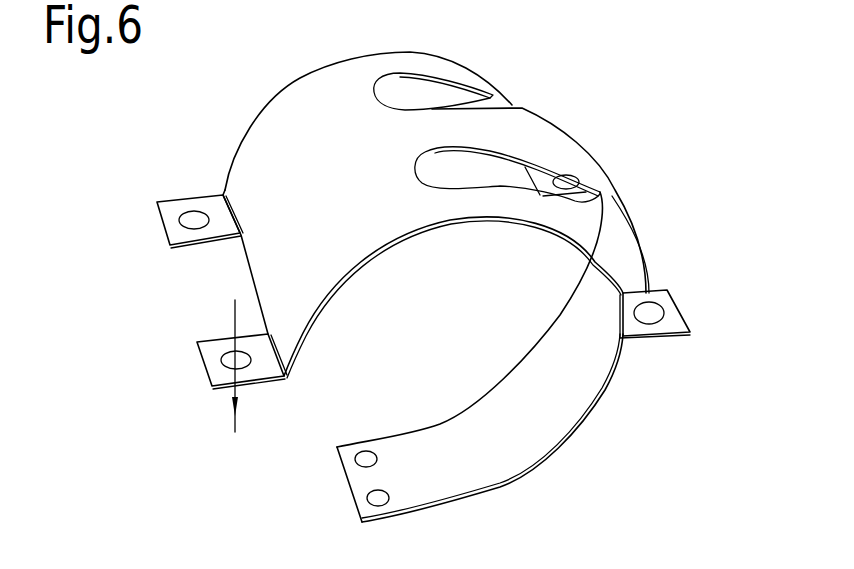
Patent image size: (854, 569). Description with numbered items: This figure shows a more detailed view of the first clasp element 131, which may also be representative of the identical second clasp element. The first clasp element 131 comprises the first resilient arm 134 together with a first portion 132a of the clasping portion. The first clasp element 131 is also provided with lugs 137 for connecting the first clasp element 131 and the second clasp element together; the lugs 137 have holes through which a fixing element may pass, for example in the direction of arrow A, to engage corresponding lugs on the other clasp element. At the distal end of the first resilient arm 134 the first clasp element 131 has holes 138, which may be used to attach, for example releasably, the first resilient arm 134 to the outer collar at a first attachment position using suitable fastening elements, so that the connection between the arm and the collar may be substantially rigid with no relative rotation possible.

The first clasp element 131 is at (700, 166).
The first portion of the clasping portion 132a is at (343, 87).
The first resilient arm 134 is at (523, 437).
The lugs 137 is at (172, 221).
The holes 138 is at (362, 501).